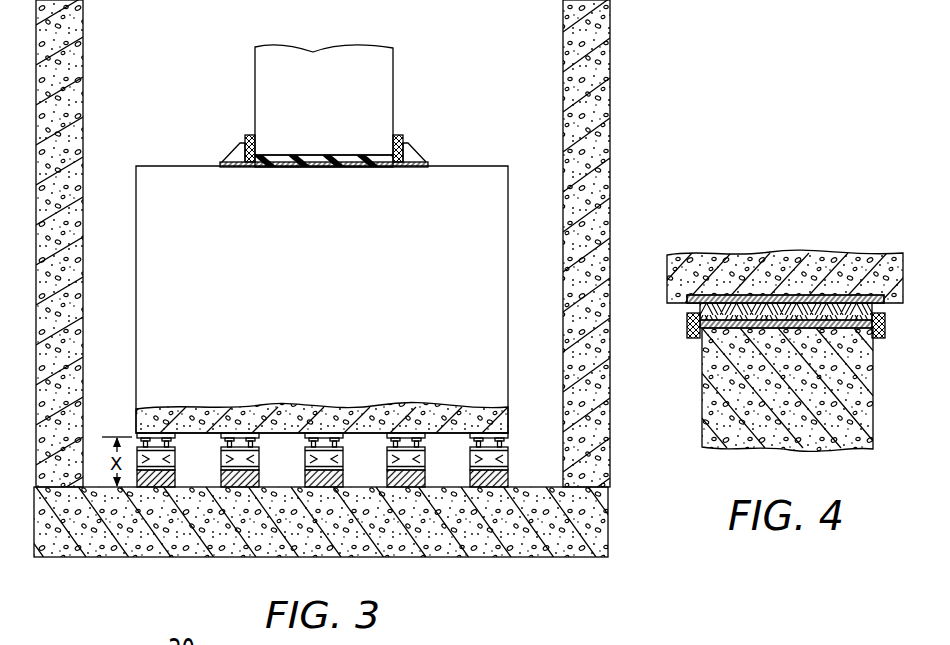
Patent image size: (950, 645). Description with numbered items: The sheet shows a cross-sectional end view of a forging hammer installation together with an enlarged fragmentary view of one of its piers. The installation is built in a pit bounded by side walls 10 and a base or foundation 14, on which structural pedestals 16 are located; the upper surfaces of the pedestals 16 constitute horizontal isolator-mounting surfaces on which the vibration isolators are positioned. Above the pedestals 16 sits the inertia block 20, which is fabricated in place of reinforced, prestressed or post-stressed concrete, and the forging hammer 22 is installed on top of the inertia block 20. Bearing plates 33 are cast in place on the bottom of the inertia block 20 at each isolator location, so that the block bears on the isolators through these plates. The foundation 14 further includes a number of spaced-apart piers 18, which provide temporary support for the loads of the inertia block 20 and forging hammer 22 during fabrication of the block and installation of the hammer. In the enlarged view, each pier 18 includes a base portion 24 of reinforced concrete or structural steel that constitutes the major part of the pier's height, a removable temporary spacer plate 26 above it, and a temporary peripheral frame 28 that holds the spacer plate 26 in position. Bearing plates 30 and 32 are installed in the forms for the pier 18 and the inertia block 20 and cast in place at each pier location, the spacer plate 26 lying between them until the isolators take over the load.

In FIG. 3, the side walls 10 is at (610, 63).
In FIG. 3, the base or foundation 14 is at (497, 562).
In FIG. 3, the structural pedestals 16 is at (221, 482).
In FIG. 3, the piers 18 is at (343, 423).
In FIG. 4, the piers 18 is at (721, 452).
In FIG. 3, the inertia block 20 is at (336, 298).
In FIG. 4, the inertia block 20 is at (672, 250).
In FIG. 3, the forging hammer 22 is at (336, 108).
In FIG. 4, the base portion 24 is at (700, 425).
In FIG. 4, the temporary spacer plate 26 is at (762, 310).
In FIG. 4, the temporary peripheral frame 28 is at (690, 322).
In FIG. 4, the bearing plate 30 is at (733, 328).
In FIG. 4, the bearing plate 32 is at (727, 301).
In FIG. 3, the bearing plates 33 is at (228, 432).